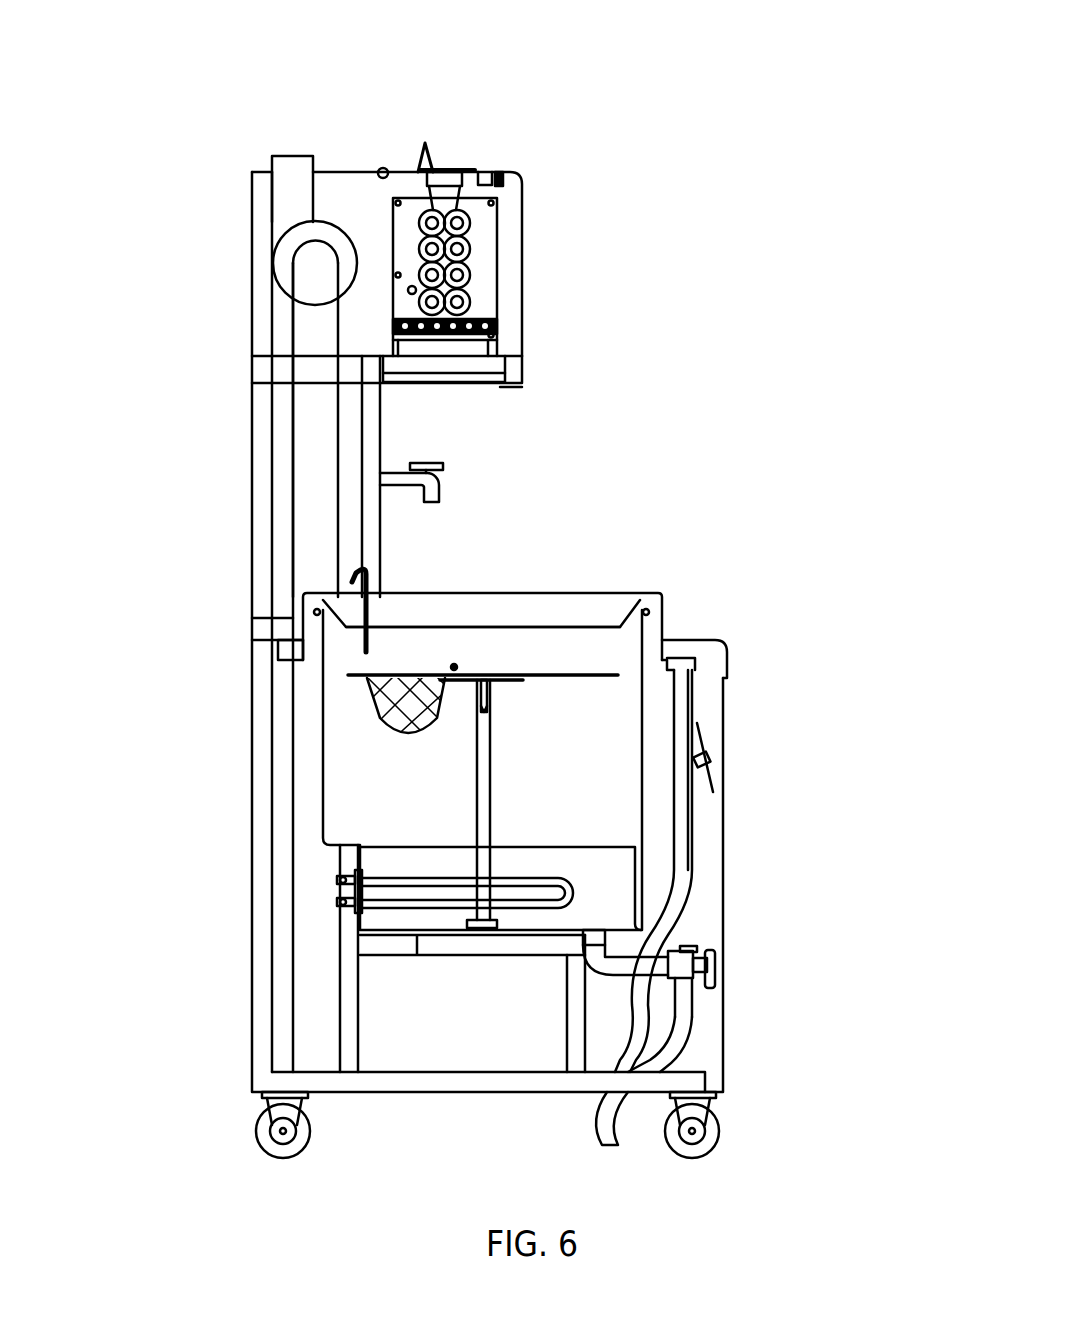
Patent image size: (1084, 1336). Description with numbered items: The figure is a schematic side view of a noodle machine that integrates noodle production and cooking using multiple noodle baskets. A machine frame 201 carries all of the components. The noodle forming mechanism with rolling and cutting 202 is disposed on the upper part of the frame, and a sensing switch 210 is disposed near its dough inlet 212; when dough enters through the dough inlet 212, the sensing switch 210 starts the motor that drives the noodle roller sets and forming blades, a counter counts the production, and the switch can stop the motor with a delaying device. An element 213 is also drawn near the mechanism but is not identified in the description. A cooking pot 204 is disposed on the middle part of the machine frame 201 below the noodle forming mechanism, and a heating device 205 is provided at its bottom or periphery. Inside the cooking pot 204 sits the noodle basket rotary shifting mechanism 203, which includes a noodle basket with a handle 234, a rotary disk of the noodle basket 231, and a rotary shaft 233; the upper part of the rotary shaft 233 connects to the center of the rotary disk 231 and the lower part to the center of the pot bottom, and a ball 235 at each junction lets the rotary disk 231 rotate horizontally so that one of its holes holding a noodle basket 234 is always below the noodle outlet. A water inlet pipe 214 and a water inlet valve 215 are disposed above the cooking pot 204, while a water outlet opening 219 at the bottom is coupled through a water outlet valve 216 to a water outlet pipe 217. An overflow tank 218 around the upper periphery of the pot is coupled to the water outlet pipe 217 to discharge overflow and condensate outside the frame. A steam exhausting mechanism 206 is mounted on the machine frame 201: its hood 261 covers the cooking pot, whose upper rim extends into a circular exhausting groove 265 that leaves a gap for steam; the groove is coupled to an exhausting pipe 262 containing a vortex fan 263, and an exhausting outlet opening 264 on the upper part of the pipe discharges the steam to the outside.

The machine frame 201 is at (252, 522).
The noodle forming mechanism with rolling and cutting 202 is at (480, 276).
The noodle basket rotary shifting mechanism 203 is at (460, 650).
The cooking pot 204 is at (637, 800).
The heating device 205 is at (390, 882).
The steam exhausting mechanism 206 is at (302, 460).
The sensing switch 210 is at (507, 172).
The dough inlet 212 is at (455, 168).
The mounting plate 213 is at (458, 380).
The water inlet pipe 214 is at (382, 447).
The water inlet valve 215 is at (433, 485).
The water outlet valve 216 is at (693, 973).
The water outlet pipe 217 is at (613, 1117).
The overflow tank 218 is at (722, 640).
The water outlet opening 219 is at (603, 930).
The rotary disk of the noodle basket 231 is at (530, 672).
The rotary shaft 233 is at (488, 830).
The noodle basket with a handle 234 is at (380, 698).
The ball 235 is at (493, 695).
The hood 261 is at (667, 623).
The exhausting pipe 262 is at (292, 337).
The vortex fan 263 is at (282, 253).
The exhausting outlet opening 264 is at (300, 162).
The circular exhausting groove 265 is at (620, 627).